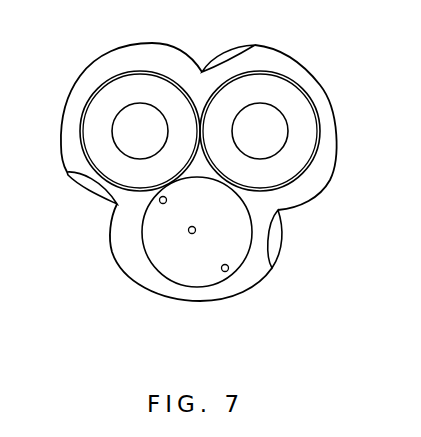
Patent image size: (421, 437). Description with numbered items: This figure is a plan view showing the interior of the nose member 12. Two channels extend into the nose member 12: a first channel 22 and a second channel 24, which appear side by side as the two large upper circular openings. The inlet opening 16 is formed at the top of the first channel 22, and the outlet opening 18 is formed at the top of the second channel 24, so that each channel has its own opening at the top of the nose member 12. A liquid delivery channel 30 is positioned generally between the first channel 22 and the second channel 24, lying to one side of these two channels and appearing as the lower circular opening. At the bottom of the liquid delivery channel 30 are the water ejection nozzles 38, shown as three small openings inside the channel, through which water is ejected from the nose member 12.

The nose member 12 is at (272, 48).
The inlet opening 16 is at (150, 73).
The outlet opening 18 is at (308, 90).
The first channel 22 is at (128, 138).
The second channel 24 is at (273, 137).
The liquid delivery channel 30 is at (233, 235).
The water ejection nozzles 38 is at (167, 198).